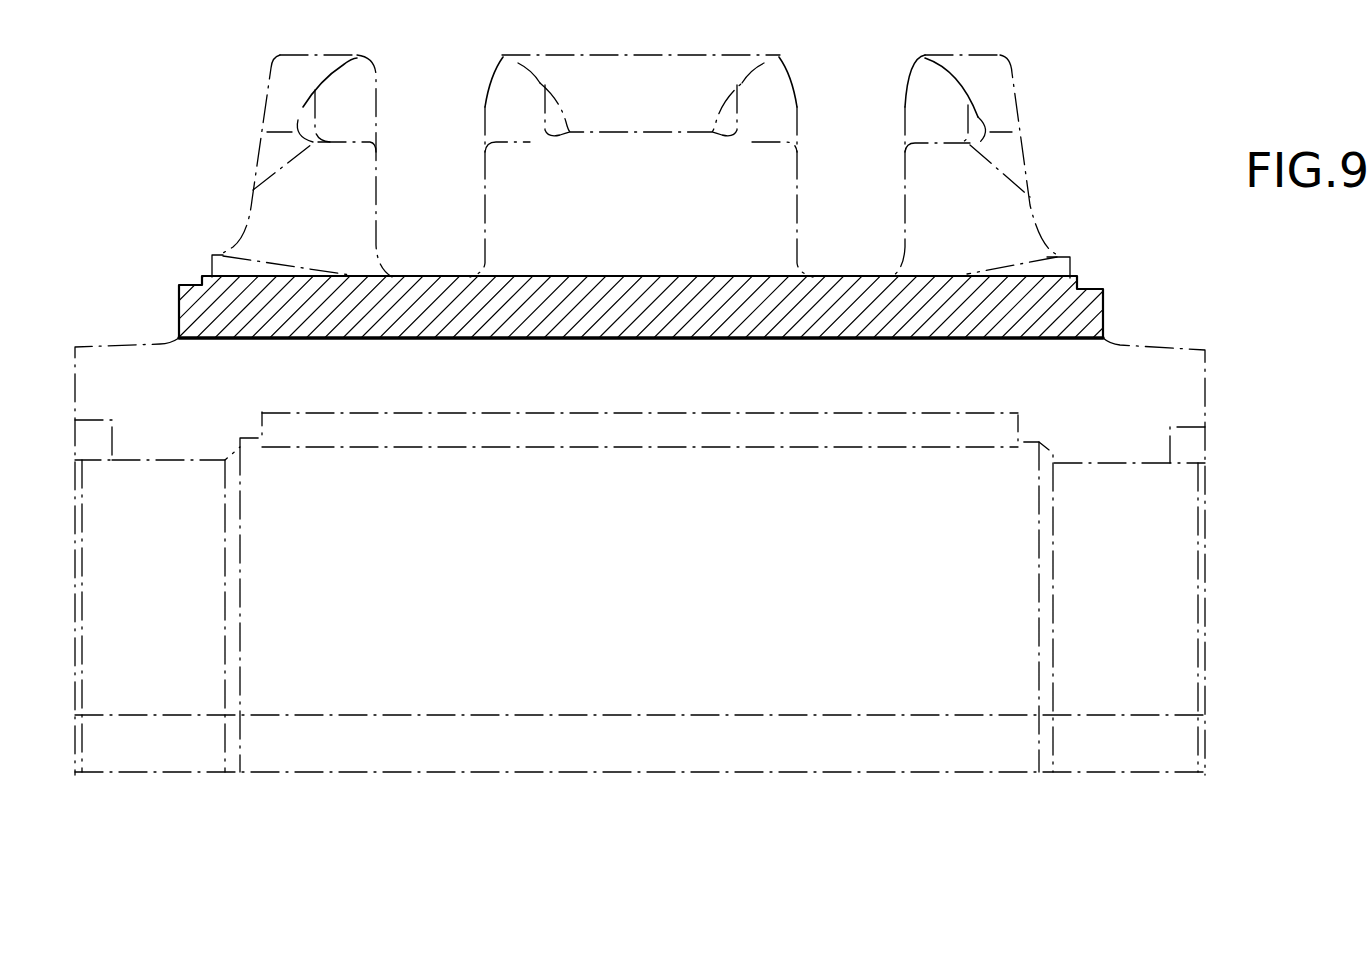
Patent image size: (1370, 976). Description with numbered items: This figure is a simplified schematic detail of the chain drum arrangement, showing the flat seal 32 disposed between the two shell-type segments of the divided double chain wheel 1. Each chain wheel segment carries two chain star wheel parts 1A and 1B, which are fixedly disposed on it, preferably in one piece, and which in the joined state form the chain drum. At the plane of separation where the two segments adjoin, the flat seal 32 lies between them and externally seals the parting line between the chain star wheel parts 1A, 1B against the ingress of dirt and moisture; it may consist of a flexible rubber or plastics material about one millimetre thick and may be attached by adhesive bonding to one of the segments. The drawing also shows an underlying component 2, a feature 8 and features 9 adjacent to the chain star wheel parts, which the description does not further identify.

The chain wheel 1 is at (729, 58).
The chain star wheel part 1A is at (278, 188).
The chain star wheel part 1B is at (958, 188).
The base housing 2 is at (748, 598).
The groove 8 is at (910, 432).
The latching lip 9 is at (900, 97).
The flat seal 32 is at (540, 310).